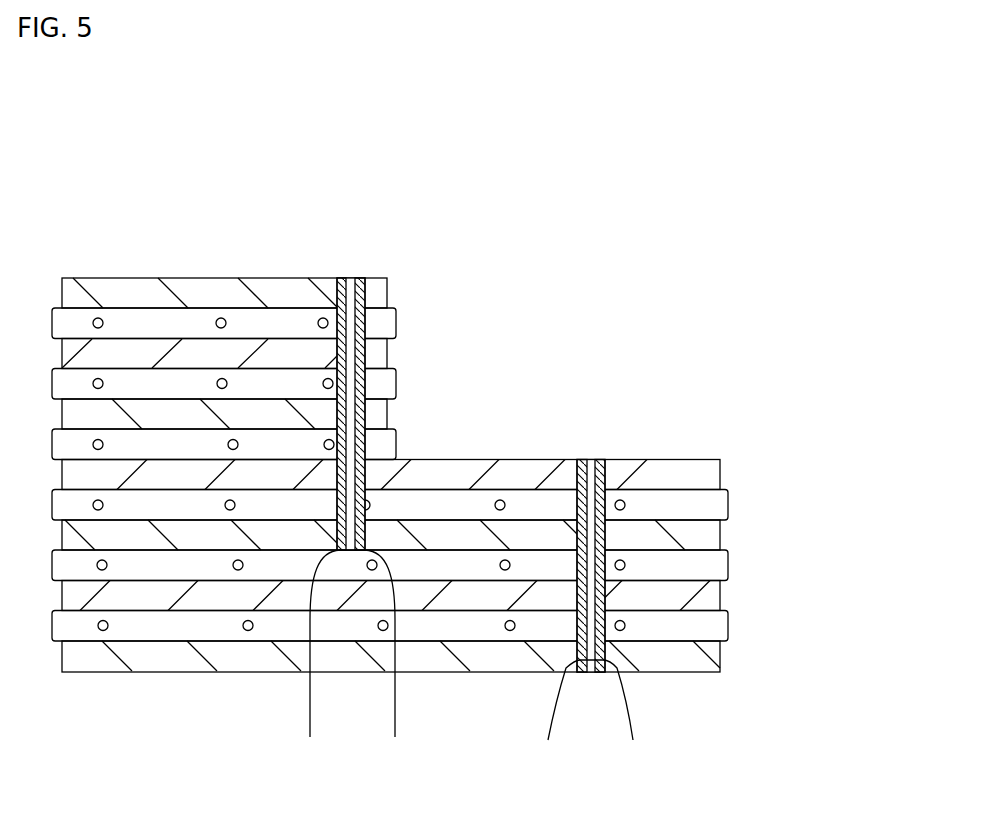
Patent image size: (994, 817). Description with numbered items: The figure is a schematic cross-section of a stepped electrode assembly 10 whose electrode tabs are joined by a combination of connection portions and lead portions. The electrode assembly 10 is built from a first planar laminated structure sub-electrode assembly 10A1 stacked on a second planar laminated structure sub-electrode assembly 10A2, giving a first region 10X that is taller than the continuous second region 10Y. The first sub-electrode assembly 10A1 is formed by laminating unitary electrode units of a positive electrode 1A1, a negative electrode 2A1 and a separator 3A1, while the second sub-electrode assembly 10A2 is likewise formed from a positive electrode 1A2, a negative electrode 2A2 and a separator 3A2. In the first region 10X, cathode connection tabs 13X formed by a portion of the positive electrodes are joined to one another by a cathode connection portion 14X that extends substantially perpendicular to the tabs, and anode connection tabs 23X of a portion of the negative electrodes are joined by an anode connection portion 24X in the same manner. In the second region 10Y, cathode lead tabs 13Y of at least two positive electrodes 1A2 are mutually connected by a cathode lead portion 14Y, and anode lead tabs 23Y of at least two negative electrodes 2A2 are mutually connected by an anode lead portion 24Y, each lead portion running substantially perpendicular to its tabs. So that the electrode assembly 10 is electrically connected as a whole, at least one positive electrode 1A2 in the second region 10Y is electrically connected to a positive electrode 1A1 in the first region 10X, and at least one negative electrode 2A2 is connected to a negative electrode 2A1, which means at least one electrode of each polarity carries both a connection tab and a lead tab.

The electrode assembly 10 is at (622, 298).
The first region 10X is at (393, 680).
The second region 10Y is at (722, 680).
The first planar laminated structure sub-electrode assembly 10A1 is at (502, 272).
The second planar laminated structure sub-electrode assembly 10A2 is at (838, 453).
The positive electrode 1A1 is at (387, 288).
The negative electrode 2A1 is at (387, 353).
The separator 3A1 is at (396, 321).
The positive electrode 1A2 is at (708, 538).
The negative electrode 2A2 is at (708, 469).
The separator 3A2 is at (710, 504).
The cathode connection tab 13X is at (360, 292).
The anode connection tab 23X is at (342, 348).
The cathode connection portion 14X is at (387, 662).
The anode connection portion 24X is at (318, 662).
The cathode lead tab 13Y is at (602, 528).
The anode lead tab 23Y is at (585, 473).
The cathode lead portion 14Y is at (625, 717).
The anode lead portion 24Y is at (558, 717).